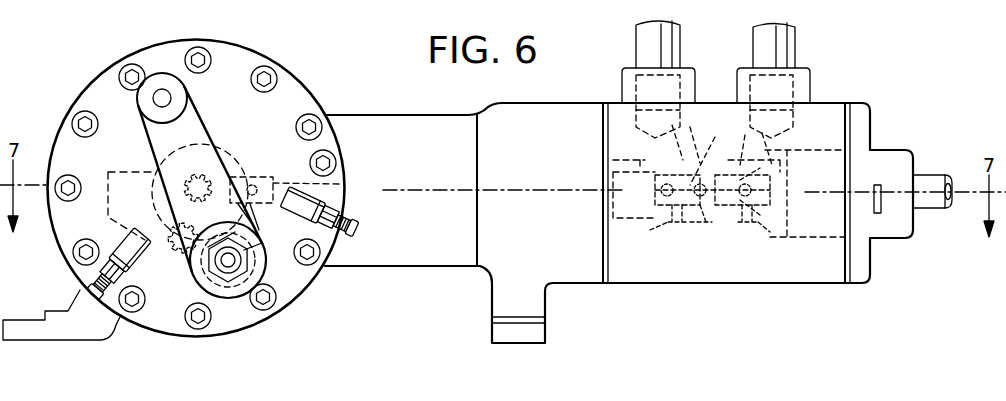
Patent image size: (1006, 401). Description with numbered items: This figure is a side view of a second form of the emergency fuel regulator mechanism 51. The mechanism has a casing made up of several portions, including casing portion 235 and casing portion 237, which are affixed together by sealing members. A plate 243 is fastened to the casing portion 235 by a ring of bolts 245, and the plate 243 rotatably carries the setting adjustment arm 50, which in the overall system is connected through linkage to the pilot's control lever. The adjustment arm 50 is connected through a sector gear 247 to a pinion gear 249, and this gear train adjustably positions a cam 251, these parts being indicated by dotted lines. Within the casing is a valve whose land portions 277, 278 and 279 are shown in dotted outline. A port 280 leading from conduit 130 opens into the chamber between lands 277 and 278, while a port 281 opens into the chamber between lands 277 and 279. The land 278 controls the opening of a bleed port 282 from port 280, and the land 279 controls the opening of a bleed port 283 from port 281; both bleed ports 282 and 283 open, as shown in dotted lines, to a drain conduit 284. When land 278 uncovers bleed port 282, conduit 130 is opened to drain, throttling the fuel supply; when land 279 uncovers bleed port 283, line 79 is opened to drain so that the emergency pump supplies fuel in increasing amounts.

The setting adjustment arm 50 is at (193, 127).
The emergency fuel regulator mechanism 51 is at (680, 285).
The line 79 is at (797, 52).
The conduit 130 is at (643, 48).
The casing portion 235 is at (445, 163).
The casing portion 237 is at (867, 112).
The plate 243 is at (92, 102).
The bolts 245 is at (258, 70).
The sector gear 247 is at (178, 219).
The pinion gear 249 is at (155, 171).
The cam 251 is at (238, 158).
The land portion 277 is at (722, 226).
The land portion 278 is at (662, 172).
The land portion 279 is at (762, 198).
The port 280 is at (690, 176).
The port 281 is at (762, 170).
The bleed port 282 is at (668, 222).
The bleed port 283 is at (762, 226).
The drain conduit 284 is at (705, 222).